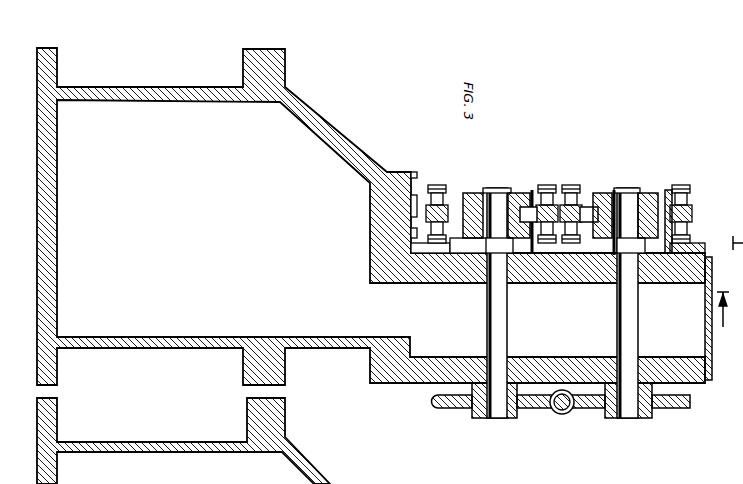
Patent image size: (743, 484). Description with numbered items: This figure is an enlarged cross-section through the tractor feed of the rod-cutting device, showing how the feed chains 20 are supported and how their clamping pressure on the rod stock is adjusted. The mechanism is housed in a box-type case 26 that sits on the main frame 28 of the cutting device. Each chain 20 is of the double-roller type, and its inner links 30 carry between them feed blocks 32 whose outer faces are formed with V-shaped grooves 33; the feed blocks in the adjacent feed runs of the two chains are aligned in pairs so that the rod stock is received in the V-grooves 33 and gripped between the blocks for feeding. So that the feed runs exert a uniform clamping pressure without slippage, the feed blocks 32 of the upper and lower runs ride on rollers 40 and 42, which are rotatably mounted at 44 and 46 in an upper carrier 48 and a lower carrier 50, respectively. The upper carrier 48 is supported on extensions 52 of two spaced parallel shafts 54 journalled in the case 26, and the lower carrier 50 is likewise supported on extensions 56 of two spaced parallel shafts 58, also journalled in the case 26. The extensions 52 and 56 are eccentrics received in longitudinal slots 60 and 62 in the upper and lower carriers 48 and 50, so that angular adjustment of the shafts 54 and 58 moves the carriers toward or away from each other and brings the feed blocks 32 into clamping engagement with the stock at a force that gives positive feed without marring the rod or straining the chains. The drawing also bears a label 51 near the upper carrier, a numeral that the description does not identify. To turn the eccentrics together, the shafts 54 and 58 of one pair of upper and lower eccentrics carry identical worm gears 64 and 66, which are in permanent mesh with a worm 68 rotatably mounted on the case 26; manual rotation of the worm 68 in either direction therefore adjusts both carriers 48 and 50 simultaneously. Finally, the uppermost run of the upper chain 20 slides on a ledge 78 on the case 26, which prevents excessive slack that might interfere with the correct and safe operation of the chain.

The chain 20 is at (431, 186).
The case 26 is at (703, 388).
The main frame 28 is at (238, 88).
The inner link 30 is at (446, 196).
The feed block 32 is at (448, 213).
The V-shaped groove 33 is at (426, 210).
The roller 40 is at (601, 200).
The roller 42 is at (528, 206).
The roller mounting 44 is at (590, 206).
The roller mounting 46 is at (541, 204).
The upper carrier 48 is at (660, 205).
The lower carrier 50 is at (468, 200).
The spacer 51 is at (560, 205).
The shaft extension 52 is at (630, 200).
The shaft 54 is at (634, 308).
The shaft extension 56 is at (500, 195).
The shaft 58 is at (493, 319).
The longitudinal slot 60 is at (627, 193).
The longitudinal slot 62 is at (479, 198).
The worm gear 64 is at (670, 409).
The worm gear 66 is at (527, 409).
The worm 68 is at (567, 413).
The ledge 78 is at (668, 200).